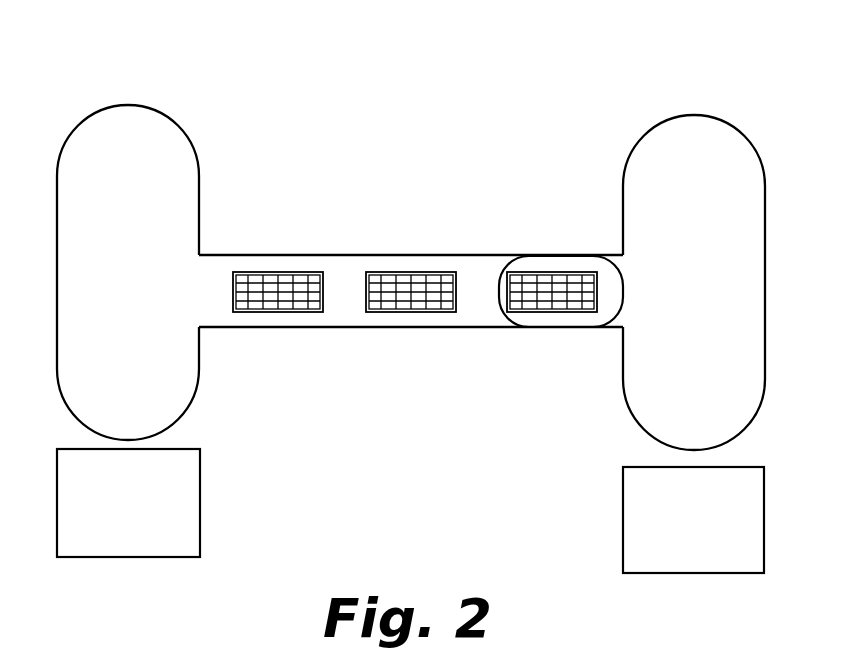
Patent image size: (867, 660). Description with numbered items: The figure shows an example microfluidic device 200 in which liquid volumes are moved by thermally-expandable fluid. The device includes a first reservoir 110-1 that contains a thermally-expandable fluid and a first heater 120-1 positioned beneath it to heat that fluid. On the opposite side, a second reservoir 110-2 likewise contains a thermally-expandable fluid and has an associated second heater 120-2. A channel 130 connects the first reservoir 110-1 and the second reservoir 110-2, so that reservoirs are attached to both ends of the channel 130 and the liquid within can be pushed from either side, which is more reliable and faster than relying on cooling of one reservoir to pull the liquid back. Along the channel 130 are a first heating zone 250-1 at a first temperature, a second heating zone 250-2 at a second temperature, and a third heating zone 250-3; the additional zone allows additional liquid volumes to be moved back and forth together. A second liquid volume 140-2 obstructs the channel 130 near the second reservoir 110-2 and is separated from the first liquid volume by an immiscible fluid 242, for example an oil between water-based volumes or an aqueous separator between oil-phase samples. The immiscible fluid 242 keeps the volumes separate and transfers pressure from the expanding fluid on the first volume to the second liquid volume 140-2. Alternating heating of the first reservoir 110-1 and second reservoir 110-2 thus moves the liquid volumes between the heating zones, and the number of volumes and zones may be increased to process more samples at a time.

The microfluidic device 200 is at (219, 73).
The first reservoir 110-1 is at (93, 238).
The second reservoir 110-2 is at (659, 247).
The channel 130 is at (220, 302).
The first heating zone 250-1 is at (278, 290).
The second heating zone 250-2 is at (409, 290).
The third heating zone 250-3 is at (550, 290).
The immiscible fluid 242 is at (481, 308).
The second liquid volume 140-2 is at (570, 341).
The first heater 120-1 is at (93, 547).
The second heater 120-2 is at (659, 566).